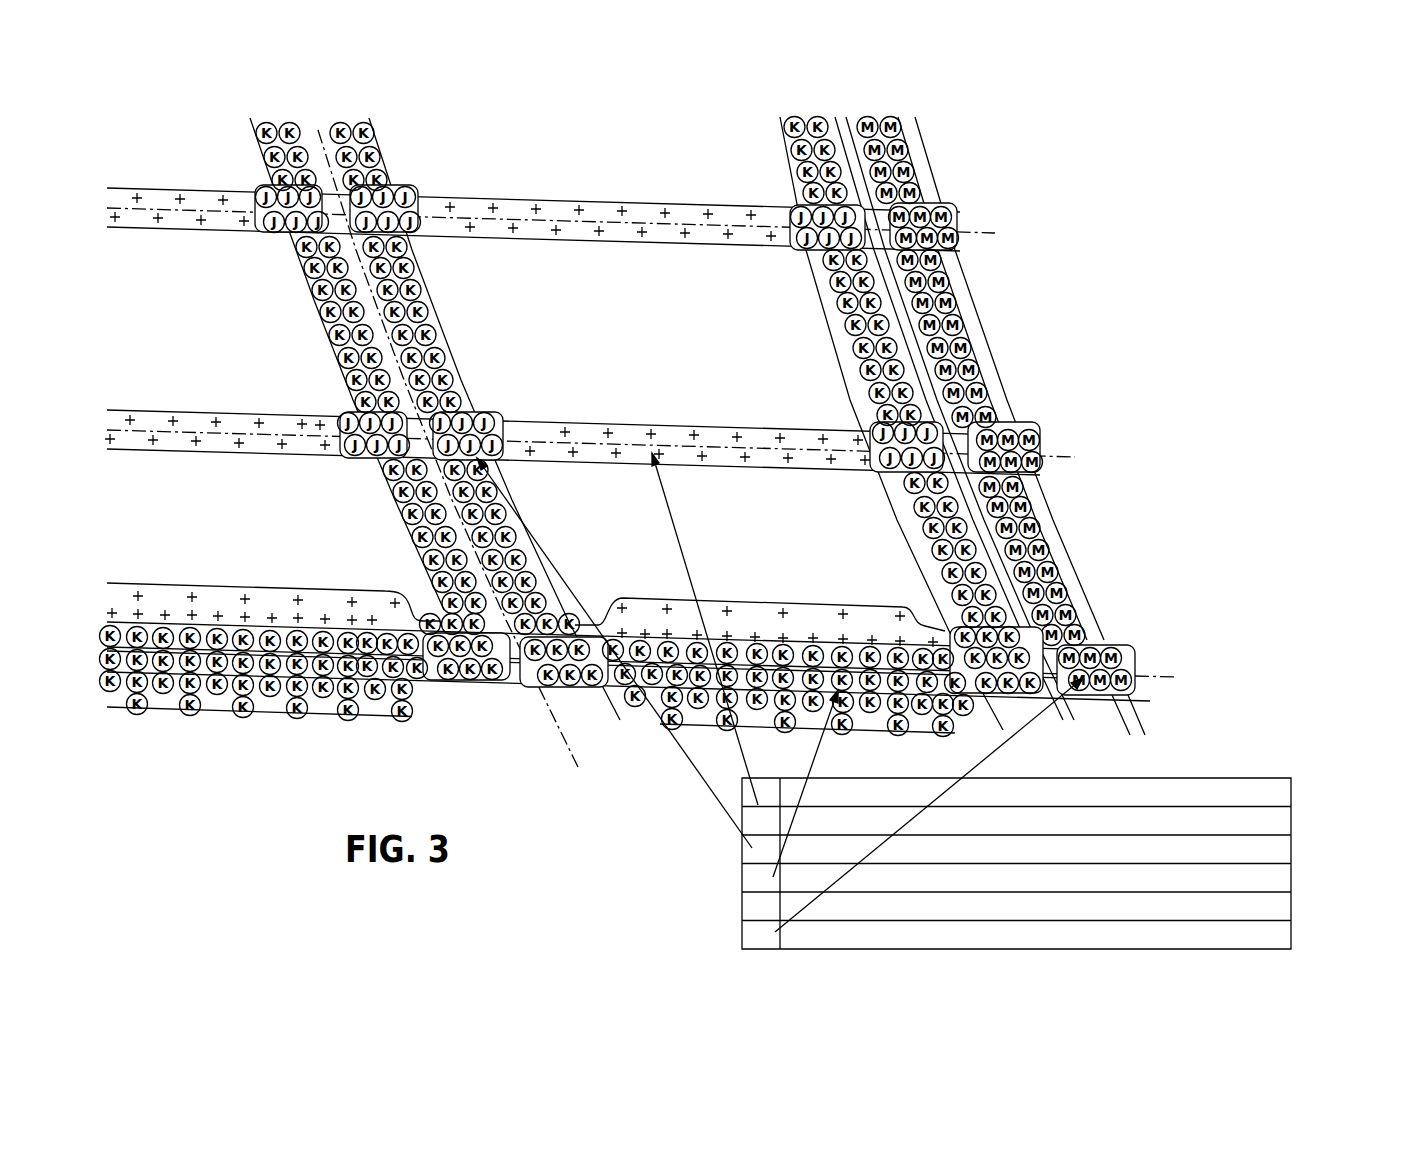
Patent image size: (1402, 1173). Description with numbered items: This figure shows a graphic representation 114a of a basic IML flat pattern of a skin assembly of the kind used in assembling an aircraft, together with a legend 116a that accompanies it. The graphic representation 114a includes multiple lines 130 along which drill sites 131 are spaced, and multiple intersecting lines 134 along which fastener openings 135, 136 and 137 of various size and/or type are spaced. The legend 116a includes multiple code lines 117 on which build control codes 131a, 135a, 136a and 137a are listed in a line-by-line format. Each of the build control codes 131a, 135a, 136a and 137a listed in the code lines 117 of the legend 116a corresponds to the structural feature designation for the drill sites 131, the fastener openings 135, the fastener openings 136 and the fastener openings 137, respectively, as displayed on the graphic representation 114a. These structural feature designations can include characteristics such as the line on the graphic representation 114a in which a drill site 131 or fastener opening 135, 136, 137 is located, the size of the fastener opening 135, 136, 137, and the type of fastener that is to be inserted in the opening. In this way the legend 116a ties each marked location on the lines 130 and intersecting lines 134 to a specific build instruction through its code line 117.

The graphic representation 114a is at (990, 332).
The legend 116a is at (1228, 778).
The code lines 117 is at (1282, 850).
The lines 130 is at (675, 425).
The drill sites 131 is at (706, 222).
The build control code 131a is at (742, 818).
The intersecting lines 134 is at (312, 300).
The fastener openings 135 is at (265, 188).
The build control code 135a is at (742, 848).
The fastener openings 136 is at (850, 303).
The build control code 136a is at (742, 876).
The fastener openings 137 is at (945, 282).
The build control code 137a is at (742, 935).